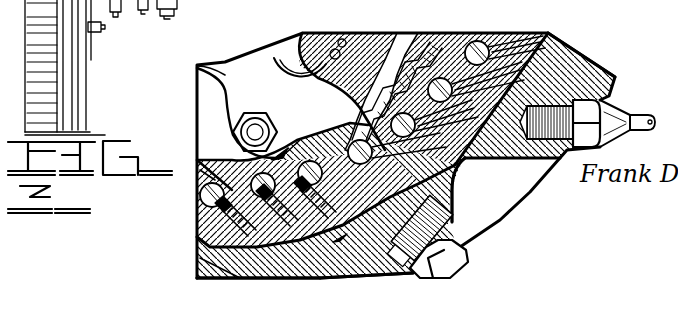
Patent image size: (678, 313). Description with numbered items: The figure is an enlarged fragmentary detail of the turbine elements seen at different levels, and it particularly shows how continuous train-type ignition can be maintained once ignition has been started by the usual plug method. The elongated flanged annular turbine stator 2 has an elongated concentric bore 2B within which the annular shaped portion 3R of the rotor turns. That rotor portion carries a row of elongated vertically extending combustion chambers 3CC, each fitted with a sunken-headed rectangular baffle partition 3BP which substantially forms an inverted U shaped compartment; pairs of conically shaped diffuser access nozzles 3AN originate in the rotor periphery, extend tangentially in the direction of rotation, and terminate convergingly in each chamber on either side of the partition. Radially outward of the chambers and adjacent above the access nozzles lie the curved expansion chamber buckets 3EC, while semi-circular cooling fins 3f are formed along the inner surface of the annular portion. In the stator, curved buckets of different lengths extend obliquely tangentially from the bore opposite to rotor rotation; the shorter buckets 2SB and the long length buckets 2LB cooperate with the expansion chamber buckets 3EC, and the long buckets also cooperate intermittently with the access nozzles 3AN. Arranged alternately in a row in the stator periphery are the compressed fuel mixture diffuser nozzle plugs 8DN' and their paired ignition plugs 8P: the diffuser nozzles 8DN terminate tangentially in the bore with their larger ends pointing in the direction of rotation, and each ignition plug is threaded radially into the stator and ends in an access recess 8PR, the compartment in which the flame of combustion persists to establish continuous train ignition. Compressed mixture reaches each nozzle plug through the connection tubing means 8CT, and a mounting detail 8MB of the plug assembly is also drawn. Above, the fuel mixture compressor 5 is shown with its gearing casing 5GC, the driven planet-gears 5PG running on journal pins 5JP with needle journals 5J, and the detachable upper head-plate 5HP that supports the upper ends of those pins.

The turbine stator 2 is at (545, 178).
The bore 2B is at (195, 240).
The shorter buckets 2SB is at (197, 258).
The long length buckets 2LB is at (583, 68).
The cooling fins 3f is at (212, 157).
The annular shaped portion 3R is at (203, 180).
The expansion chamber buckets 3EC is at (199, 197).
The combustion chambers 3CC is at (464, 41).
The baffle partition 3BP is at (502, 33).
The diffuser access nozzles 3AN is at (547, 38).
The fuel mixture compressor 5 is at (335, 92).
The head-plate 5HP is at (196, 81).
The journal pins 5JP is at (305, 46).
The needle journal 5J is at (342, 39).
The planet-gears 5PG is at (400, 40).
The gearing casing 5GC is at (408, 34).
The ignition plugs 8P is at (458, 256).
The access recess 8PR is at (452, 189).
The mounting base 8MB is at (366, 269).
The diffuser nozzles 8DN is at (534, 142).
The diffuser nozzle plugs 8DN' is at (609, 128).
The connection tubing means 8CT is at (631, 116).